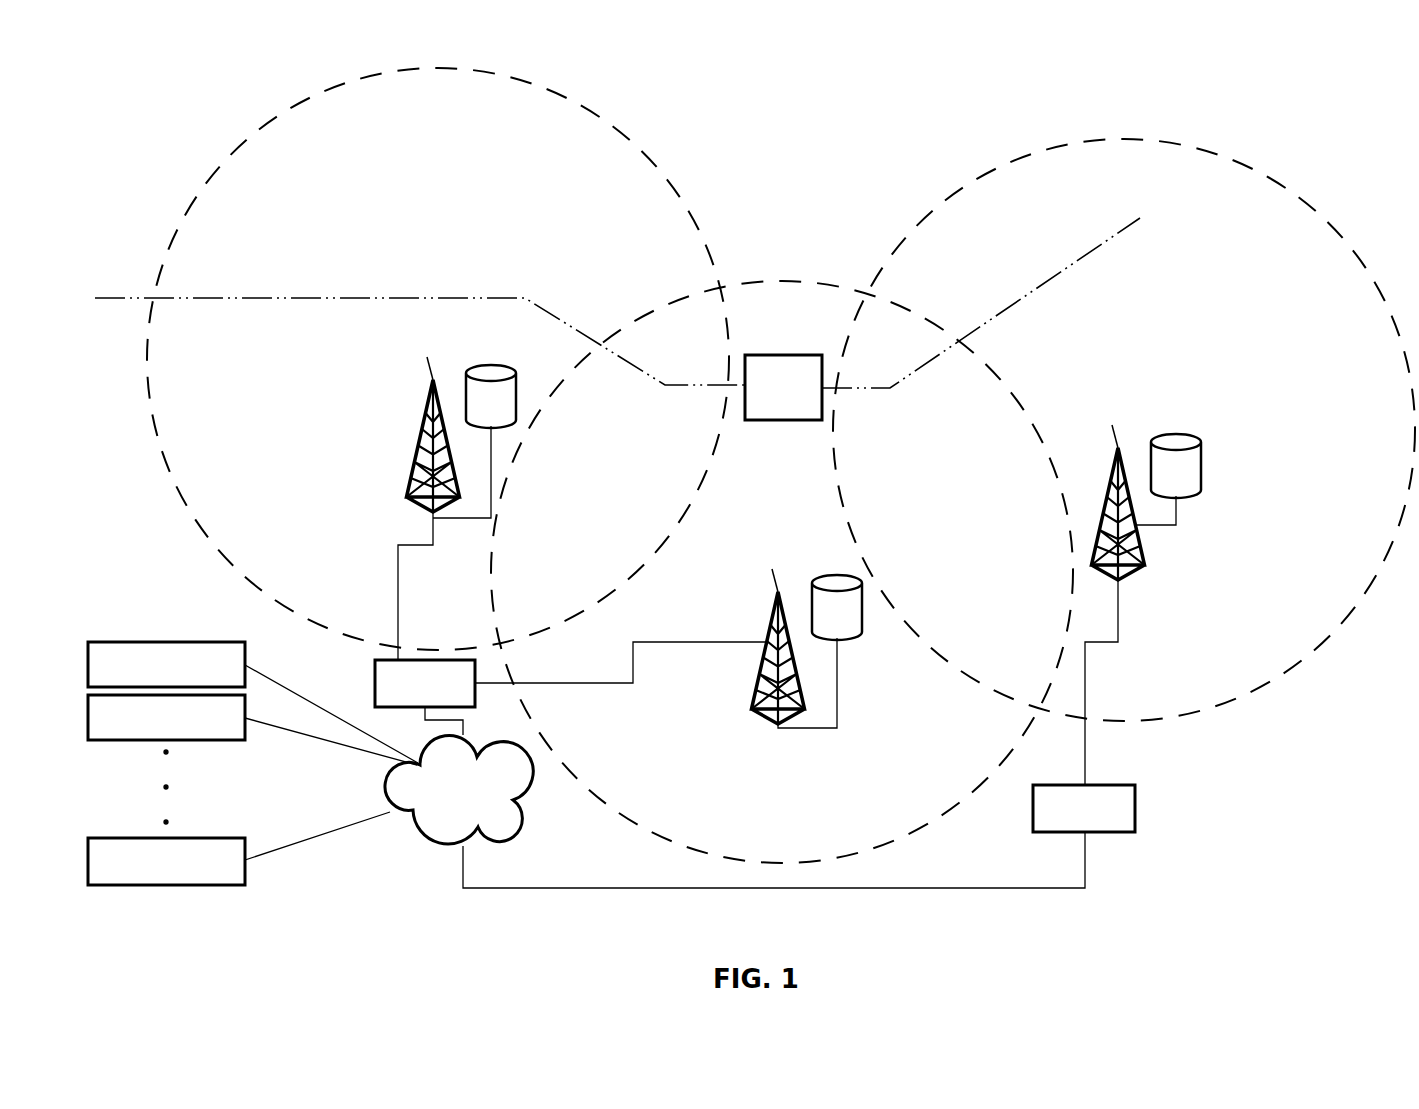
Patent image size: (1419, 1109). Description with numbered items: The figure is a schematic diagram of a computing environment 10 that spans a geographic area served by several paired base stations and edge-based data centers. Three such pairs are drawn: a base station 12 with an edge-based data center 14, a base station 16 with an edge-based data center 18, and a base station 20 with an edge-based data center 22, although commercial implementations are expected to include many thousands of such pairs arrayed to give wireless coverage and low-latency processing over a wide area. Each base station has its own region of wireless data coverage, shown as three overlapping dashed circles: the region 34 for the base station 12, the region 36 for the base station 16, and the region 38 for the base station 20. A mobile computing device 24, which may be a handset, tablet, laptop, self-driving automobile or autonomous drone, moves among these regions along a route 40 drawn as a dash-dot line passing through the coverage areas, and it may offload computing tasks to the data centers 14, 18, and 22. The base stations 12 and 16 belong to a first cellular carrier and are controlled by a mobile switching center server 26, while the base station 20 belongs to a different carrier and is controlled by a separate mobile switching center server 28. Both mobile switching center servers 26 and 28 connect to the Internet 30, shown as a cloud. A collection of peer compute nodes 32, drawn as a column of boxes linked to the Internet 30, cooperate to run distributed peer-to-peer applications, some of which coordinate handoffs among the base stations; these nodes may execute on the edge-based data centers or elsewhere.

The computing environment 10 is at (828, 146).
The base station 12 is at (420, 435).
The edge-based data center 14 is at (482, 367).
The base station 16 is at (770, 628).
The edge-based data center 18 is at (858, 637).
The base station 20 is at (1108, 470).
The edge-based data center 22 is at (1202, 452).
The mobile computing device 24 is at (770, 355).
The mobile switching center server 26 is at (373, 668).
The mobile switching center server 28 is at (1138, 802).
The Internet 30 is at (525, 832).
The peer compute nodes 32 is at (249, 657).
The region of coverage 34 is at (158, 455).
The region of coverage 36 is at (752, 282).
The region of coverage 38 is at (938, 204).
The route 40 is at (150, 298).